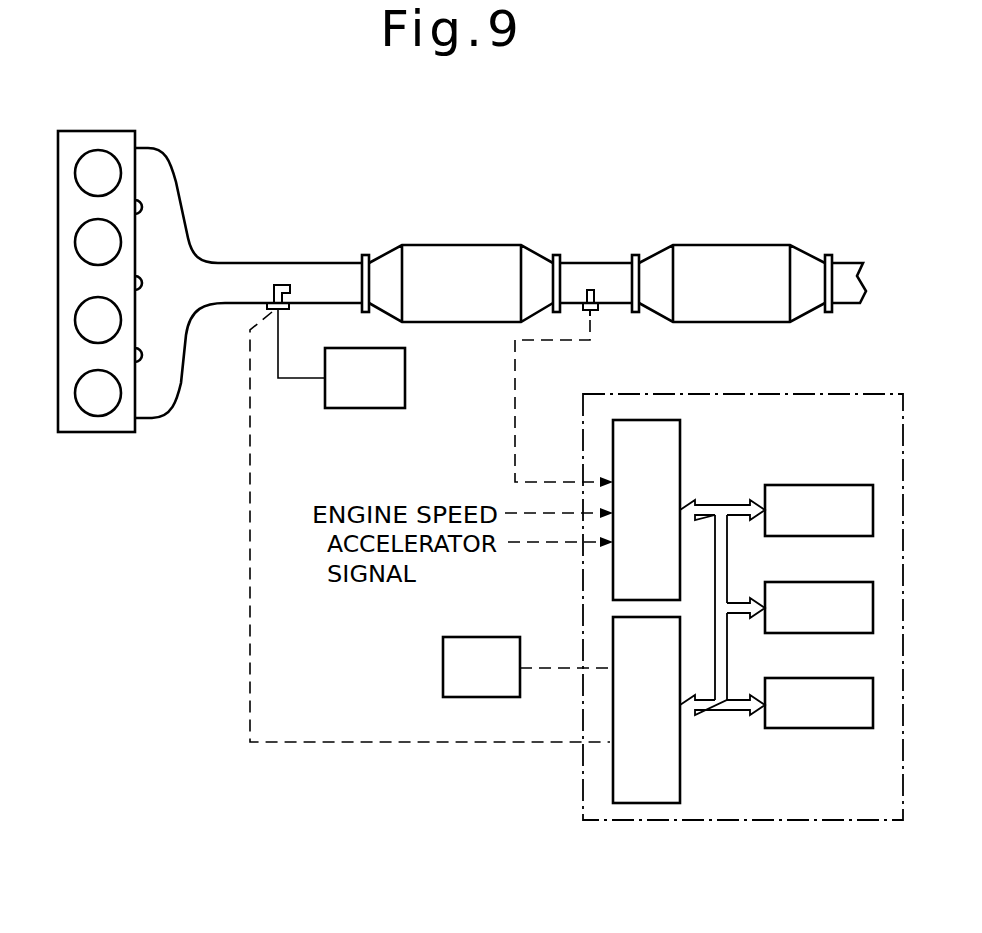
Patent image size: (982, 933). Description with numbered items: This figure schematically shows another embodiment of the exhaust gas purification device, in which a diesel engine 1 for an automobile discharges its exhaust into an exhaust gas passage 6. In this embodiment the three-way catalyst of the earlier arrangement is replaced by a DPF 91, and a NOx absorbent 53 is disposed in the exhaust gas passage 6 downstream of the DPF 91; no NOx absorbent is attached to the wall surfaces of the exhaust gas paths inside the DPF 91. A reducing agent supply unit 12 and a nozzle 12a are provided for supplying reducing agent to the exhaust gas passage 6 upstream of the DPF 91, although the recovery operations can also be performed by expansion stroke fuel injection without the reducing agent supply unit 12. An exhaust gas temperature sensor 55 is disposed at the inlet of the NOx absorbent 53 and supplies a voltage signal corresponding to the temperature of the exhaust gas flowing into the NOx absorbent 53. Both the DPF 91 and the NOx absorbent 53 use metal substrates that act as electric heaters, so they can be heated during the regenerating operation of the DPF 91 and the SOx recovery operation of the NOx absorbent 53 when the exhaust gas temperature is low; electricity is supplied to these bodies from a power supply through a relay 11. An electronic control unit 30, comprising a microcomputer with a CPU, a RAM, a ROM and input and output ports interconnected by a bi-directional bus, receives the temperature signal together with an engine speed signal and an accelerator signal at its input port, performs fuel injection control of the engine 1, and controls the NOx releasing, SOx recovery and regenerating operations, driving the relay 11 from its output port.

The engine 1 is at (98, 130).
The exhaust gas passage 6 is at (272, 268).
The DPF 91 is at (455, 250).
The NOx absorbent 53 is at (733, 250).
The nozzle 12a is at (295, 311).
The reducing agent supply unit 12 is at (405, 379).
The exhaust gas temperature sensor 55 is at (598, 306).
The relay 11 is at (494, 682).
The electronic control unit 30 is at (846, 820).